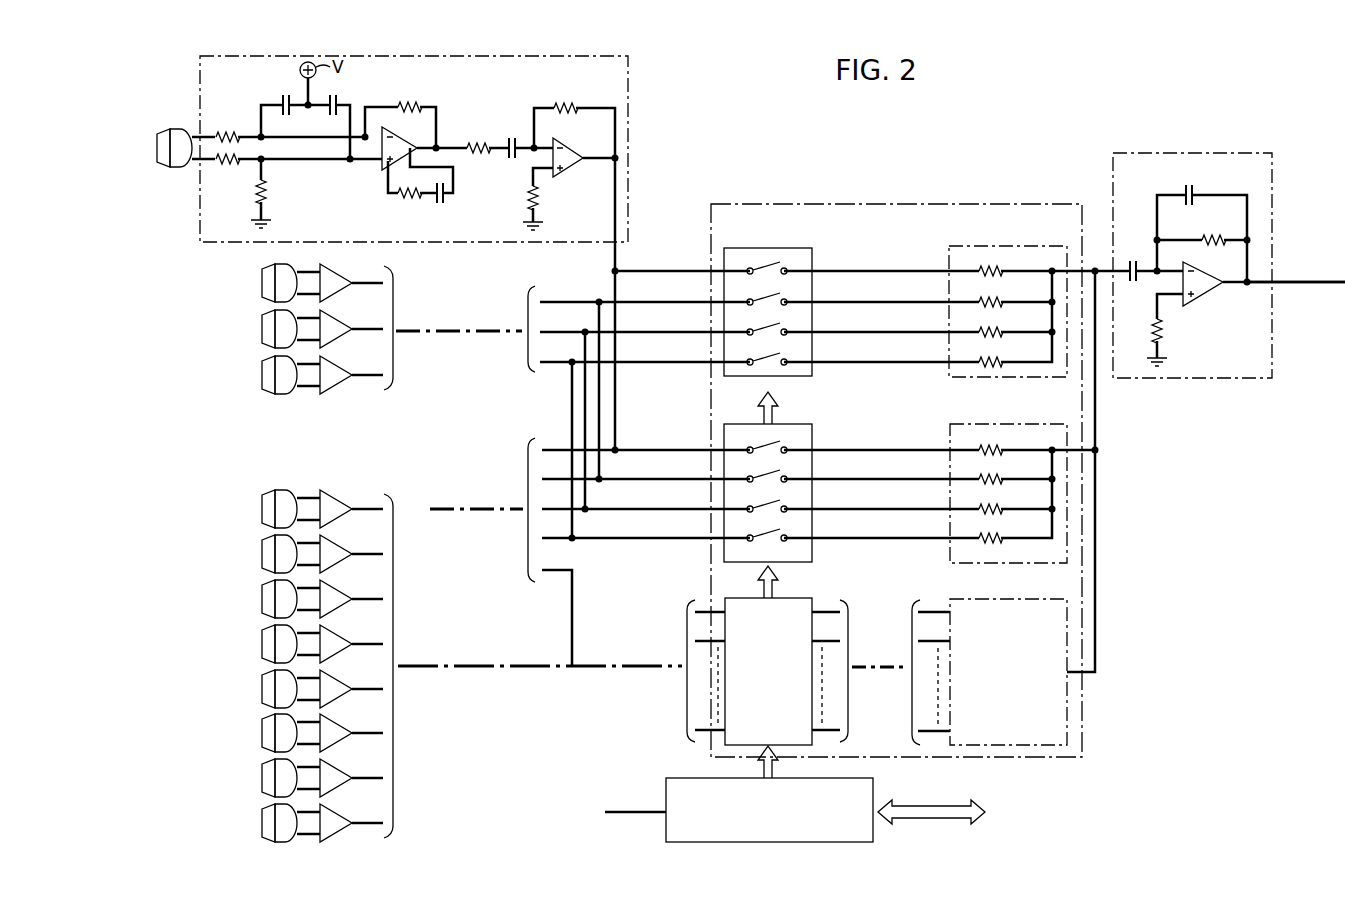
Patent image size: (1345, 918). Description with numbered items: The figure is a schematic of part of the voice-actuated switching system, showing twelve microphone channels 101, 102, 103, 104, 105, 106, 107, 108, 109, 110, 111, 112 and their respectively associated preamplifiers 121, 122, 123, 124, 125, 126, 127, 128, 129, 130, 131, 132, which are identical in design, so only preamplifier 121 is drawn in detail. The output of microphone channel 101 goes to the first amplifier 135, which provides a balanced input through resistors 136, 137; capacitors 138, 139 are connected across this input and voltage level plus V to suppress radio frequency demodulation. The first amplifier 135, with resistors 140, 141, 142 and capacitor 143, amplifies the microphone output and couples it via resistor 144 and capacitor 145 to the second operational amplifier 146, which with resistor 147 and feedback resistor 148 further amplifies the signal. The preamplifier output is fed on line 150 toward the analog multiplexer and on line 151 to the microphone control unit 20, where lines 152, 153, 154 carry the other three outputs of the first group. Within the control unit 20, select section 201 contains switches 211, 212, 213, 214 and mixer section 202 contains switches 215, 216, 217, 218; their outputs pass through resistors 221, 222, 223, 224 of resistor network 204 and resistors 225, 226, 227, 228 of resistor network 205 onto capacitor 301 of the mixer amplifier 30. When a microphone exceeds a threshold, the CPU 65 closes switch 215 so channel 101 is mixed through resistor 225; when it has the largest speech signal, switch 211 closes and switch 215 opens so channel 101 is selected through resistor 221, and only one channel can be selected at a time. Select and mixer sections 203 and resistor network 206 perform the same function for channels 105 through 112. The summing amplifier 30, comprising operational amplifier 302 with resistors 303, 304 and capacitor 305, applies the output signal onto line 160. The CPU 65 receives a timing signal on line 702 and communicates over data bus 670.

The microphone control unit 20 is at (1055, 204).
The mixer amplifier 30 is at (1235, 153).
The CPU 65 is at (878, 790).
The microphone channel 101 is at (174, 138).
The microphone channel 102 is at (260, 283).
The microphone channel 103 is at (260, 329).
The microphone channel 104 is at (260, 375).
The microphone channel 105 is at (260, 509).
The microphone channel 106 is at (260, 554).
The microphone channel 107 is at (260, 599).
The microphone channel 108 is at (260, 644).
The microphone channel 109 is at (260, 689).
The microphone channel 110 is at (261, 733).
The microphone channel 111 is at (262, 778).
The microphone channel 112 is at (261, 823).
The preamplifier 121 is at (628, 70).
The preamplifier 122 is at (340, 277).
The preamplifier 123 is at (340, 323).
The preamplifier 124 is at (340, 369).
The preamplifier 125 is at (340, 503).
The preamplifier 126 is at (340, 548).
The preamplifier 127 is at (340, 593).
The preamplifier 128 is at (340, 638).
The preamplifier 129 is at (340, 683).
The preamplifier 130 is at (340, 727).
The preamplifier 131 is at (340, 772).
The preamplifier 132 is at (340, 817).
The first amplifier 135 is at (403, 140).
The resistor 136 is at (230, 127).
The resistor 137 is at (230, 170).
The capacitor 138 is at (289, 93).
The capacitor 139 is at (336, 93).
The resistor 140 is at (277, 204).
The resistor 141 is at (412, 205).
The resistor 142 is at (412, 96).
The capacitor 143 is at (446, 204).
The resistor 144 is at (481, 136).
The capacitor 145 is at (515, 135).
The second operational amplifier 146 is at (575, 153).
The resistor 147 is at (523, 208).
The feedback resistor 148 is at (568, 97).
The line 150 is at (468, 510).
The line 151 is at (668, 271).
The signal line 152 is at (668, 301).
The signal line 153 is at (668, 331).
The signal line 154 is at (668, 361).
The line 160 is at (1326, 278).
The select section 201 is at (782, 246).
The mixer section 202 is at (782, 422).
The select and mixer sections 203 is at (782, 596).
The resistor network 204 is at (1038, 244).
The resistor network 205 is at (1038, 422).
The resistor network 206 is at (1040, 597).
The switch 211 is at (766, 261).
The switch 212 is at (766, 292).
The switch 213 is at (766, 322).
The switch 214 is at (766, 352).
The switch 215 is at (766, 440).
The switch 216 is at (766, 469).
The switch 217 is at (766, 499).
The switch 218 is at (766, 528).
The resistor 221 is at (992, 262).
The resistor 222 is at (992, 293).
The resistor 223 is at (992, 323).
The resistor 224 is at (992, 353).
The resistor 225 is at (992, 441).
The resistor 226 is at (992, 470).
The resistor 227 is at (992, 500).
The resistor 228 is at (992, 529).
The capacitor 301 is at (1136, 259).
The operational amplifier 302 is at (1207, 278).
The resistor 303 is at (1216, 229).
The resistor 304 is at (1144, 342).
The capacitor 305 is at (1191, 182).
The data bus 670 is at (928, 795).
The line 702 is at (642, 810).